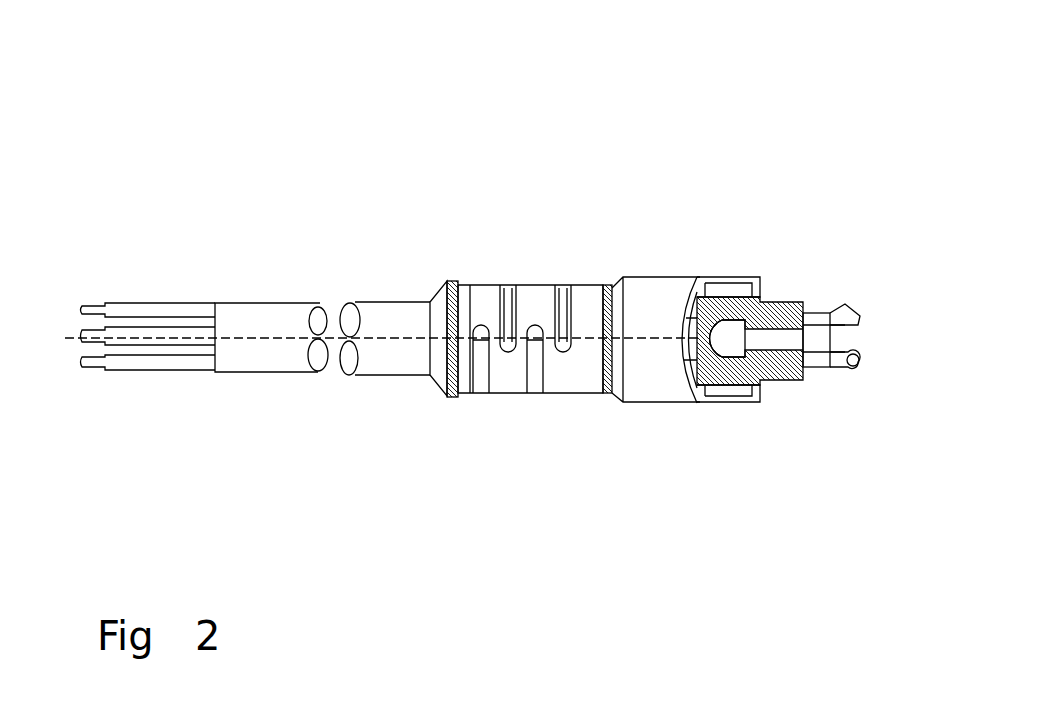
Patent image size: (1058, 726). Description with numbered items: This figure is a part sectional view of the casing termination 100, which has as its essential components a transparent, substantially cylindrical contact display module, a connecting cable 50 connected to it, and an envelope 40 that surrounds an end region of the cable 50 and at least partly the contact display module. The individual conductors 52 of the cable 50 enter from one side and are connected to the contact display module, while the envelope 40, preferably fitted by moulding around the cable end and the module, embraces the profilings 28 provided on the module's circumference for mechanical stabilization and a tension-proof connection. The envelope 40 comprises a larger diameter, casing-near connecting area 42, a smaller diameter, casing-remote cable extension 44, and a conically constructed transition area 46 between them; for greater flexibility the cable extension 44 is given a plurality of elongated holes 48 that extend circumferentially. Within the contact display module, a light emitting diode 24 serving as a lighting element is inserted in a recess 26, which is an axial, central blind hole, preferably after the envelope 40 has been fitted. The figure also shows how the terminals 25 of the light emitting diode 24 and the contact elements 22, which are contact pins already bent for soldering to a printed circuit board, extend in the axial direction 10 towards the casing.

The casing termination 100 is at (642, 142).
The individual conductors 52 is at (153, 337).
The connecting cable 50 is at (263, 353).
The axial direction 10 is at (335, 338).
The cable extension 44 is at (516, 334).
The elongated holes 48 is at (563, 297).
The transition area 46 is at (617, 382).
The envelope 40 is at (645, 293).
The connecting area 42 is at (675, 385).
The profilings 28 is at (743, 292).
The light emitting diode 24 is at (737, 342).
The recess 26 is at (786, 378).
The terminals 25 is at (835, 320).
The contact elements 22 is at (862, 355).